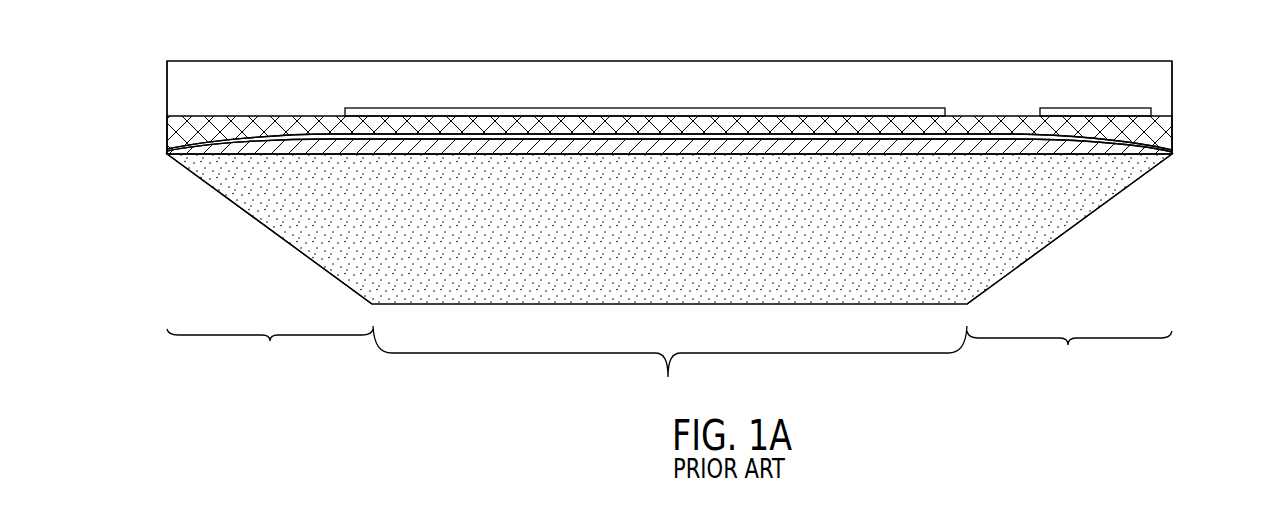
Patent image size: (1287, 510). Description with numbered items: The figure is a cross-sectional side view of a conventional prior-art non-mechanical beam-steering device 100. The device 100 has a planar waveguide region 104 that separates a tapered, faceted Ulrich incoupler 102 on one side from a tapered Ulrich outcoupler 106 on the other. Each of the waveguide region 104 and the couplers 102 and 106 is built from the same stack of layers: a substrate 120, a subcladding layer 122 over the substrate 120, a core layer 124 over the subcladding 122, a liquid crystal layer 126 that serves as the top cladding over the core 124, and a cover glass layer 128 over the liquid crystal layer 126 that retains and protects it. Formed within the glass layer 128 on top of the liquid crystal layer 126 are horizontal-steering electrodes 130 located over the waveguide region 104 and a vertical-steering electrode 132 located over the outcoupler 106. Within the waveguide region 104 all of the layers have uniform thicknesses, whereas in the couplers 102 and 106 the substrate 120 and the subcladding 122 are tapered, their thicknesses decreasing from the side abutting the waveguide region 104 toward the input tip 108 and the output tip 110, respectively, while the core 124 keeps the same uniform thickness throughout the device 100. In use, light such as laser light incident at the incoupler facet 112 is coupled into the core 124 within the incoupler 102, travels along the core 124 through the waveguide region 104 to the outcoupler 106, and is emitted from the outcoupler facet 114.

The non-mechanical beam-steering device 100 is at (673, 215).
The Ulrich incoupler 102 is at (270, 356).
The planar waveguide region 104 is at (670, 369).
The Ulrich outcoupler 106 is at (1069, 357).
The input tip 108 is at (158, 133).
The output tip 110 is at (1184, 138).
The incoupler facet 112 is at (264, 238).
The outcoupler facet 114 is at (1104, 213).
The substrate 120 is at (1022, 246).
The subcladding layer 122 is at (1072, 147).
The core layer 124 is at (1172, 152).
The liquid crystal layer 126 is at (1160, 132).
The cover glass layer 128 is at (1158, 90).
The horizontal-steering electrodes 130 is at (686, 108).
The vertical-steering electrode 132 is at (1092, 108).